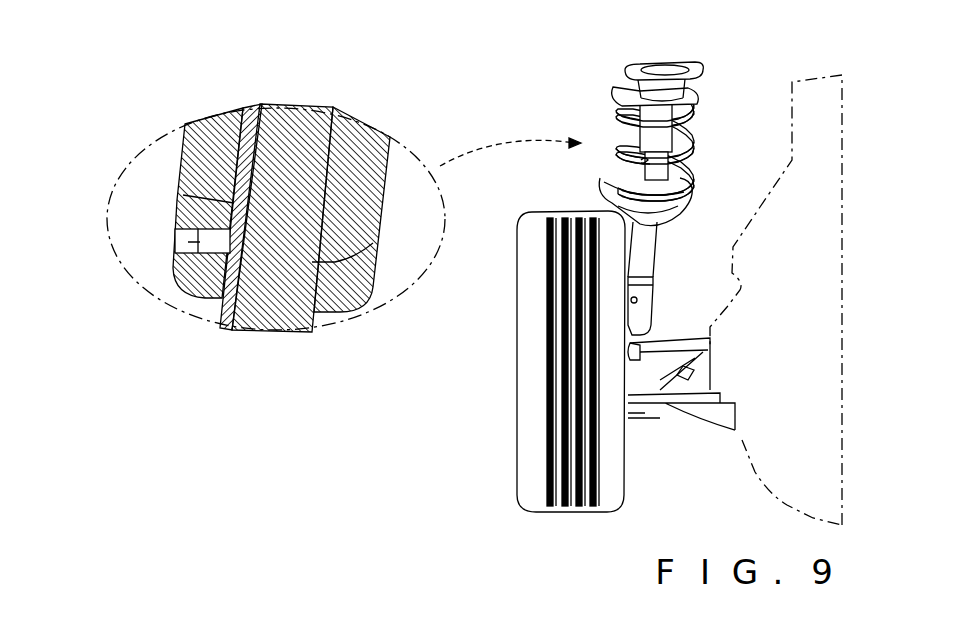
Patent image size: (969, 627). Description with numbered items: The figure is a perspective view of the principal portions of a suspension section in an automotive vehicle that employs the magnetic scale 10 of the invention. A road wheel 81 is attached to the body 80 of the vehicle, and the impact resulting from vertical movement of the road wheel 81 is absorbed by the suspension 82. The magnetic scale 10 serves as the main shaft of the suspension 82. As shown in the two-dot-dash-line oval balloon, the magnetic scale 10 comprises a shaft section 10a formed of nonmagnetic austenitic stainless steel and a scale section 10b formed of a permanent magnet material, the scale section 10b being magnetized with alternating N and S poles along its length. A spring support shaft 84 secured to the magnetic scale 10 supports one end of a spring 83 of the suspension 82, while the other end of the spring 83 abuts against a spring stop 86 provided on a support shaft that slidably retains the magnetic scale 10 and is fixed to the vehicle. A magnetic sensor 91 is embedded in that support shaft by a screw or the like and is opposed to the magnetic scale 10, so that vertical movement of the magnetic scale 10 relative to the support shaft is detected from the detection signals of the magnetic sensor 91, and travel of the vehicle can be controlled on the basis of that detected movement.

The magnetic scale 10 is at (336, 208).
The shaft section 10a is at (373, 243).
The scale section 10b is at (234, 203).
The magnetic sensor 91 is at (198, 242).
The body 80 is at (845, 253).
The road wheel 81 is at (519, 370).
The suspension 82 is at (585, 92).
The spring 83 is at (690, 148).
The spring support shaft 84 is at (660, 213).
The spring stop 86 is at (692, 105).